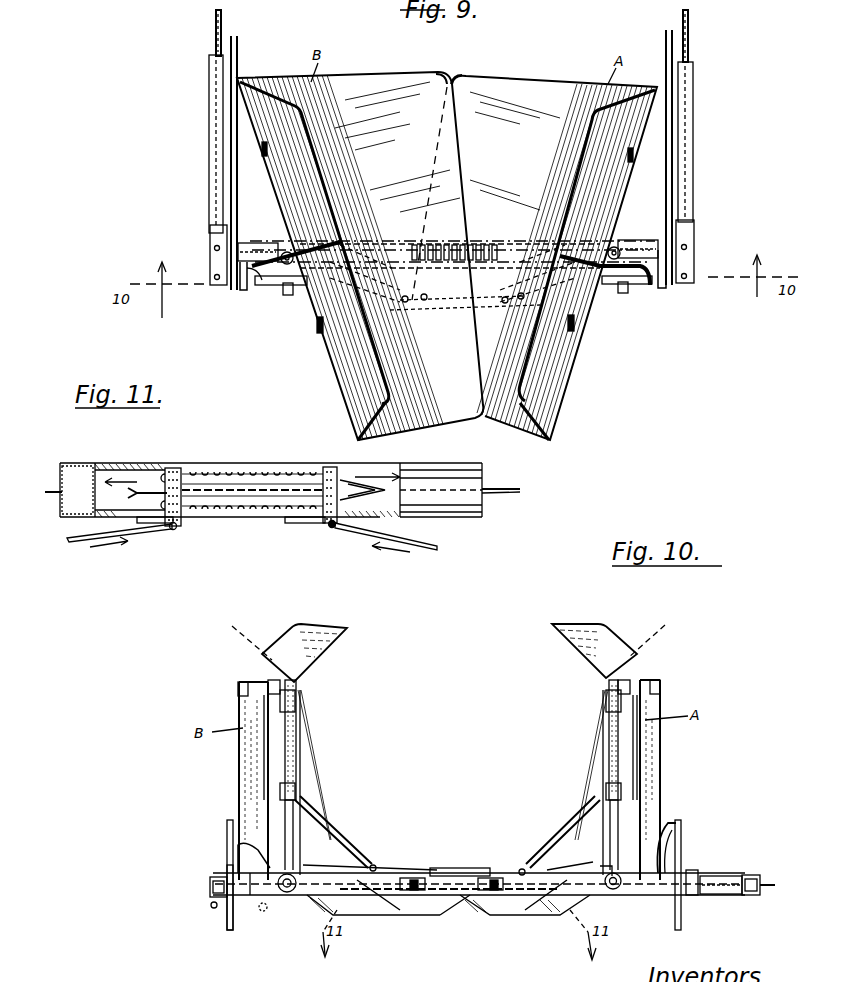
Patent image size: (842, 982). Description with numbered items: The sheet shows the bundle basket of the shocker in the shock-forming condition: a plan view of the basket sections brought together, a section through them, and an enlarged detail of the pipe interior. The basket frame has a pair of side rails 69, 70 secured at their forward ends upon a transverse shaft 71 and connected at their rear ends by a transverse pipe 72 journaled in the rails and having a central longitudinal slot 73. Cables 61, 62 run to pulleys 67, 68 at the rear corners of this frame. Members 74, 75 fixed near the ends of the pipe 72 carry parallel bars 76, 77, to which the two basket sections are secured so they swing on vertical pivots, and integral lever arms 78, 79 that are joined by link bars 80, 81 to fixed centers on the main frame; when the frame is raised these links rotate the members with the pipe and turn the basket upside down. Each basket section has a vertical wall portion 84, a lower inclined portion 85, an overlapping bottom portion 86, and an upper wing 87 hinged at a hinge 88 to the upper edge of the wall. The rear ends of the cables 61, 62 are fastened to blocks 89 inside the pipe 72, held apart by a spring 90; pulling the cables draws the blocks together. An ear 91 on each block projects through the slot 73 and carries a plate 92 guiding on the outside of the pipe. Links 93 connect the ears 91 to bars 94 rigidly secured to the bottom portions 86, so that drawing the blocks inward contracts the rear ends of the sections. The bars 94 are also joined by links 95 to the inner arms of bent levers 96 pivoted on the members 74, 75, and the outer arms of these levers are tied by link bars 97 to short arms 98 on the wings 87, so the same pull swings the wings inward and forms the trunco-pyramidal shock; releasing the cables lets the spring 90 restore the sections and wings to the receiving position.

In FIG. 9, the cable 61 is at (689, 43).
In FIG. 11, the cable 61 is at (490, 491).
In FIG. 10, the cable 61 is at (760, 884).
In FIG. 9, the cable 62 is at (214, 34).
In FIG. 11, the cable 62 is at (56, 496).
In FIG. 10, the cable 62 is at (210, 886).
In FIG. 9, the pulley 67 is at (694, 250).
In FIG. 10, the pulley 67 is at (700, 878).
In FIG. 9, the pulley 68 is at (210, 253).
In FIG. 10, the pulley 68 is at (216, 896).
In FIG. 9, the side rail 69 is at (694, 156).
In FIG. 10, the side rail 69 is at (692, 870).
In FIG. 9, the side rail 70 is at (209, 172).
In FIG. 10, the side rail 70 is at (213, 873).
In FIG. 9, the transverse shaft 71 is at (463, 295).
In FIG. 9, the transverse pipe 72 is at (450, 249).
In FIG. 11, the transverse pipe 72 is at (481, 512).
In FIG. 10, the transverse pipe 72 is at (327, 885).
In FIG. 9, the longitudinal slot 73 is at (462, 281).
In FIG. 11, the longitudinal slot 73 is at (254, 519).
In FIG. 10, the longitudinal slot 73 is at (457, 884).
In FIG. 9, the member 74 is at (640, 243).
In FIG. 10, the member 74 is at (613, 892).
In FIG. 9, the member 75 is at (260, 250).
In FIG. 10, the member 75 is at (258, 898).
In FIG. 9, the parallel bar 76 is at (626, 245).
In FIG. 10, the parallel bar 76 is at (615, 742).
In FIG. 9, the parallel bar 77 is at (283, 252).
In FIG. 10, the parallel bar 77 is at (287, 753).
In FIG. 9, the lever arm 78 is at (664, 291).
In FIG. 10, the lever arm 78 is at (672, 836).
In FIG. 9, the lever arm 79 is at (241, 292).
In FIG. 10, the lever arm 79 is at (250, 853).
In FIG. 10, the link bar 80 is at (682, 920).
In FIG. 10, the link bar 81 is at (228, 925).
In FIG. 9, the vertical wall portion 84 is at (358, 440).
In FIG. 10, the vertical wall portion 84 is at (250, 795).
In FIG. 9, the lower inclined portion 85 is at (490, 430).
In FIG. 10, the lower inclined portion 85 is at (316, 814).
In FIG. 9, the overlapping bottom portion 86 is at (471, 76).
In FIG. 10, the overlapping bottom portion 86 is at (463, 870).
In FIG. 9, the upper wing 87 is at (307, 152).
In FIG. 10, the upper wing 87 is at (320, 660).
In FIG. 9, the hinge 88 is at (277, 197).
In FIG. 10, the hinge 88 is at (268, 686).
In FIG. 11, the block 89 is at (174, 468).
In FIG. 11, the spring 90 is at (200, 468).
In FIG. 11, the ear 91 is at (175, 530).
In FIG. 10, the ear 91 is at (460, 897).
In FIG. 11, the plate 92 is at (205, 523).
In FIG. 10, the plate 92 is at (418, 898).
In FIG. 9, the link 93 is at (440, 239).
In FIG. 11, the link 93 is at (80, 542).
In FIG. 10, the link 93 is at (364, 910).
In FIG. 9, the bar 94 is at (465, 310).
In FIG. 10, the bar 94 is at (374, 866).
In FIG. 10, the link 95 is at (317, 867).
In FIG. 9, the bent lever 96 is at (288, 296).
In FIG. 10, the bent lever 96 is at (282, 897).
In FIG. 9, the link bar 97 is at (263, 287).
In FIG. 10, the link bar 97 is at (265, 772).
In FIG. 9, the short arm 98 is at (340, 242).
In FIG. 10, the short arm 98 is at (268, 656).